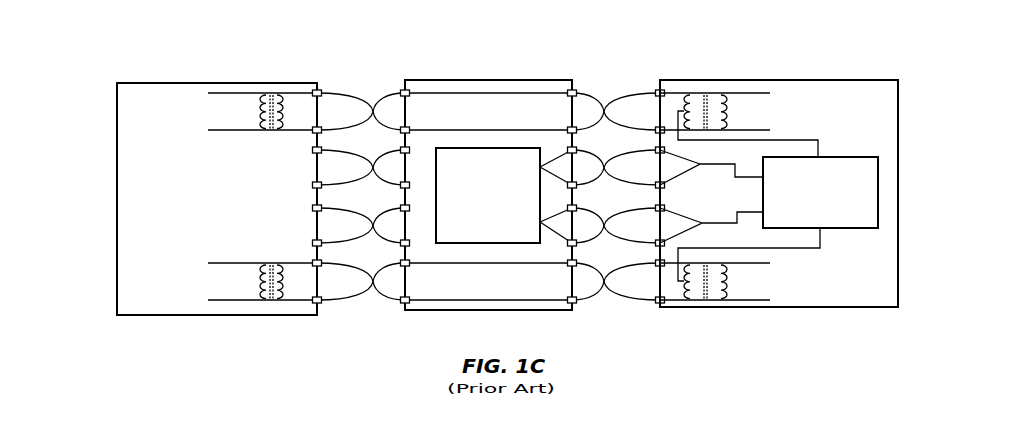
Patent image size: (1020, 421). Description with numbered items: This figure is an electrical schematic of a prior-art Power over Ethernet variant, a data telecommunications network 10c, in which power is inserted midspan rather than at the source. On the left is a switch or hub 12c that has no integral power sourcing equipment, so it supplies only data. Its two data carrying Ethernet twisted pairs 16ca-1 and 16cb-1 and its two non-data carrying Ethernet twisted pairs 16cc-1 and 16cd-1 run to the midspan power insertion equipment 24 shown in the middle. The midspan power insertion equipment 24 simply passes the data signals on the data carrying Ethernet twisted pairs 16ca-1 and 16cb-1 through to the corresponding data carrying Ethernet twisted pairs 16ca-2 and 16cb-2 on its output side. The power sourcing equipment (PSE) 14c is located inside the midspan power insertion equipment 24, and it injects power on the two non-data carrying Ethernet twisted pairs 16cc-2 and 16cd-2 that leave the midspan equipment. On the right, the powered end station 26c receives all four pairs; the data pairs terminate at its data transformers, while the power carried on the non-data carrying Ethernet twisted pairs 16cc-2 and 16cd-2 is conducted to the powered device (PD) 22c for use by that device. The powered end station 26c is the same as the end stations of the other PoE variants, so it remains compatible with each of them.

The data telecommunications network 10c is at (603, 58).
The switch or hub 12c is at (288, 81).
The power sourcing equipment (PSE) 14c is at (483, 148).
The data carrying Ethernet twisted pair 16ca-1 is at (324, 91).
The non-data carrying Ethernet twisted pair 16cc-1 is at (324, 148).
The non-data carrying Ethernet twisted pair 16cd-1 is at (324, 206).
The data carrying Ethernet twisted pair 16cb-1 is at (324, 261).
The data carrying Ethernet twisted pair 16ca-2 is at (656, 91).
The non-data carrying Ethernet twisted pair 16cc-2 is at (656, 148).
The non-data carrying Ethernet twisted pair 16cd-2 is at (656, 206).
The data carrying Ethernet twisted pair 16cb-2 is at (656, 261).
The powered device (PD) 22c is at (883, 192).
The midspan power insertion equipment 24 is at (540, 115).
The powered end station 26c is at (900, 284).